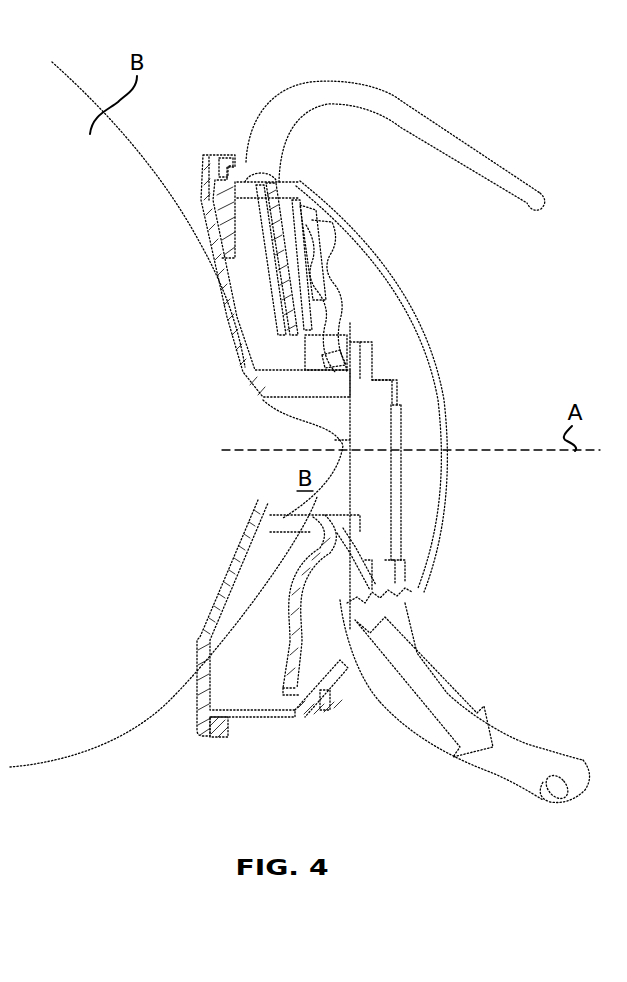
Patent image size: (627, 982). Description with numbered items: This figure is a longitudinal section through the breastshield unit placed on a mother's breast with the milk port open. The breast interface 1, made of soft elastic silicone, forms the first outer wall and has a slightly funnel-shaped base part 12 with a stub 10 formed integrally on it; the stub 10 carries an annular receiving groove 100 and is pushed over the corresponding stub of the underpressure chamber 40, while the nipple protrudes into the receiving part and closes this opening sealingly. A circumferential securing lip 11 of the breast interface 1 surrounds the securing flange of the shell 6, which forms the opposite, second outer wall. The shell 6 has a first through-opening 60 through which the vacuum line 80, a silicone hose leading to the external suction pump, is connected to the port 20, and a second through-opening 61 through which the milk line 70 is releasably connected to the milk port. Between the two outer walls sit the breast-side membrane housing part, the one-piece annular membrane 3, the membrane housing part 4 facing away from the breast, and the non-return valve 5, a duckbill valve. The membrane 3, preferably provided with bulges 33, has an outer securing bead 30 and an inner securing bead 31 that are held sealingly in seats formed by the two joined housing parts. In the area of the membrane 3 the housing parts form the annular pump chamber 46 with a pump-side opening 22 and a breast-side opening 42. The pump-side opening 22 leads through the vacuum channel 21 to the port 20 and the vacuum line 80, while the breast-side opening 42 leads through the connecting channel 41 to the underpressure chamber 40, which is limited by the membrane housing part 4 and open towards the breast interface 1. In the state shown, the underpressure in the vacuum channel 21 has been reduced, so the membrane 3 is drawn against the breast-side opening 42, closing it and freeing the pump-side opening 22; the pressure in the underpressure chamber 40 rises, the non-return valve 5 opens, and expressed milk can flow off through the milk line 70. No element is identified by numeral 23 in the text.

The breast interface 1 is at (180, 691).
The membrane 3 is at (318, 312).
The membrane housing part 4 is at (397, 408).
The non-return valve 5 is at (387, 573).
The shell 6 is at (427, 537).
The stub 10 is at (267, 400).
The securing lip 11 is at (230, 163).
The base part 12 is at (203, 213).
The port 20 is at (262, 214).
The vacuum channel 21 is at (287, 238).
The pump-side opening 22 is at (297, 300).
The ring section 23 is at (303, 637).
The outer securing bead 30 is at (305, 245).
The inner securing bead 31 is at (330, 377).
The bulges 33 is at (300, 266).
The underpressure chamber 40 is at (370, 480).
The connecting channel 41 is at (357, 371).
The breast-side opening 42 is at (320, 367).
The annular pump chamber 46 is at (300, 598).
The first through-opening 60 is at (280, 185).
The second through-opening 61 is at (357, 672).
The milk line 70 is at (537, 750).
The vacuum line 80 is at (497, 181).
The annular receiving groove 100 is at (307, 393).